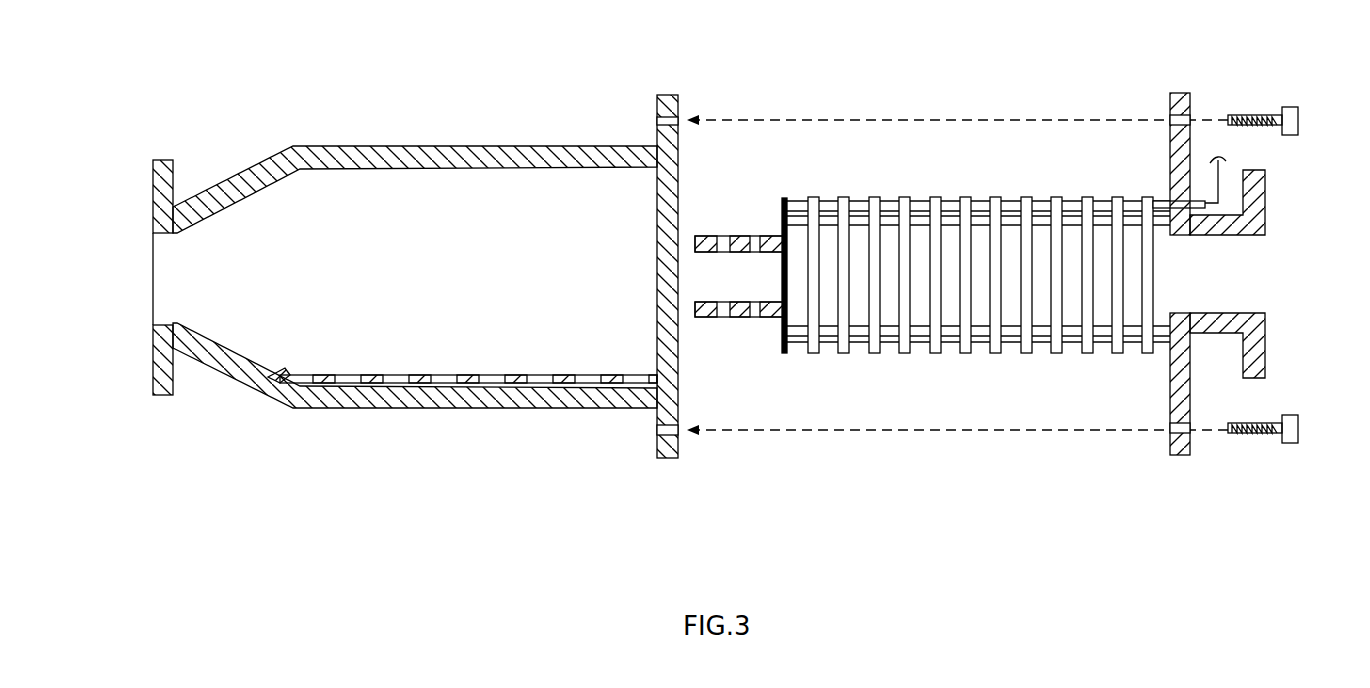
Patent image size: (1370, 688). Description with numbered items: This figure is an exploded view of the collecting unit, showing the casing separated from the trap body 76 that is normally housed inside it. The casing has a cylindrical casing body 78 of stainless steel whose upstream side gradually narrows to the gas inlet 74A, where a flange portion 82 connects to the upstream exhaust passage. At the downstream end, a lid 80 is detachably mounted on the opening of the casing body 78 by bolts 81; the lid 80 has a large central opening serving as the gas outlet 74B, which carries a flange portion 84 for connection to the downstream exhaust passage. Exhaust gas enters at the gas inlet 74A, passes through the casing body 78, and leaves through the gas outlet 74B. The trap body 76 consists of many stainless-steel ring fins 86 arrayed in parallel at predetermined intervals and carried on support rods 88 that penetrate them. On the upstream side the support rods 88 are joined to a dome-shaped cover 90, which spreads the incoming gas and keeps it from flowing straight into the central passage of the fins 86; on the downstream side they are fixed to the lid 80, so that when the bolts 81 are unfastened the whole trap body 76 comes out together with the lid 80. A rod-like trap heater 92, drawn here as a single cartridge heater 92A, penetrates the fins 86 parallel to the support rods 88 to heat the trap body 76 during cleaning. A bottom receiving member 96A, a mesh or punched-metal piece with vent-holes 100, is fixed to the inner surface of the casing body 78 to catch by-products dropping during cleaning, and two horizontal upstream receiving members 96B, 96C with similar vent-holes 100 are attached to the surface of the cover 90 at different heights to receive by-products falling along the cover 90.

The gas inlet 74A is at (152, 278).
The gas outlet 74B is at (1266, 262).
The trap body 76 is at (985, 231).
The casing body 78 is at (547, 146).
The lid 80 is at (1187, 107).
The bolts 81 is at (1299, 118).
The flange portion 82 is at (157, 397).
The flange portion 84 is at (1266, 365).
The fins 86 is at (935, 355).
The support rods 88 is at (888, 212).
The cover 90 is at (783, 197).
The trap heater 92 is at (857, 200).
The cartridge heater 92A is at (1075, 201).
The bottom receiving member 96A is at (482, 408).
The upstream receiving member 96B is at (713, 236).
The upstream receiving member 96C is at (713, 318).
The vent-holes 100 is at (583, 388).